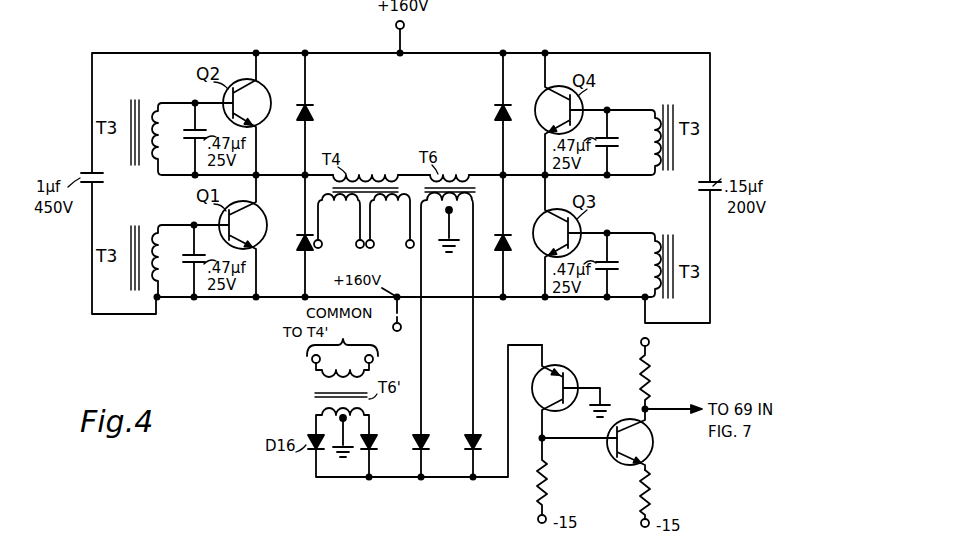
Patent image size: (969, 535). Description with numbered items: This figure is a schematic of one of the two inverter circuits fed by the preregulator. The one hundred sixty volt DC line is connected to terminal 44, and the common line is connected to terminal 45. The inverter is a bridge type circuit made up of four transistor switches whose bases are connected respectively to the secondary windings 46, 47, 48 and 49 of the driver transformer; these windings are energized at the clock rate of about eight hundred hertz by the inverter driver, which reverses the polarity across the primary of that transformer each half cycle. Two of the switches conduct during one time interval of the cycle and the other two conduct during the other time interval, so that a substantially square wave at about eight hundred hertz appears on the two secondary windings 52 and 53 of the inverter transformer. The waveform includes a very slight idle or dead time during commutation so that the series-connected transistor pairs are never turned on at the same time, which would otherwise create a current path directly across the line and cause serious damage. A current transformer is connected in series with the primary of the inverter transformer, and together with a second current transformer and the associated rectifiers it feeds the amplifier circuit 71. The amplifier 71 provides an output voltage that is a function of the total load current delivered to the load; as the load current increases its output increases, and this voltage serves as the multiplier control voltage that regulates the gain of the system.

The terminal 44 is at (399, 36).
The terminal 45 is at (408, 334).
The secondary winding 46 is at (135, 291).
The secondary winding 47 is at (133, 103).
The secondary winding 48 is at (667, 300).
The secondary winding 49 is at (665, 103).
The secondary winding 52 is at (339, 220).
The secondary winding 53 is at (391, 220).
The amplifier circuit 71 is at (614, 370).